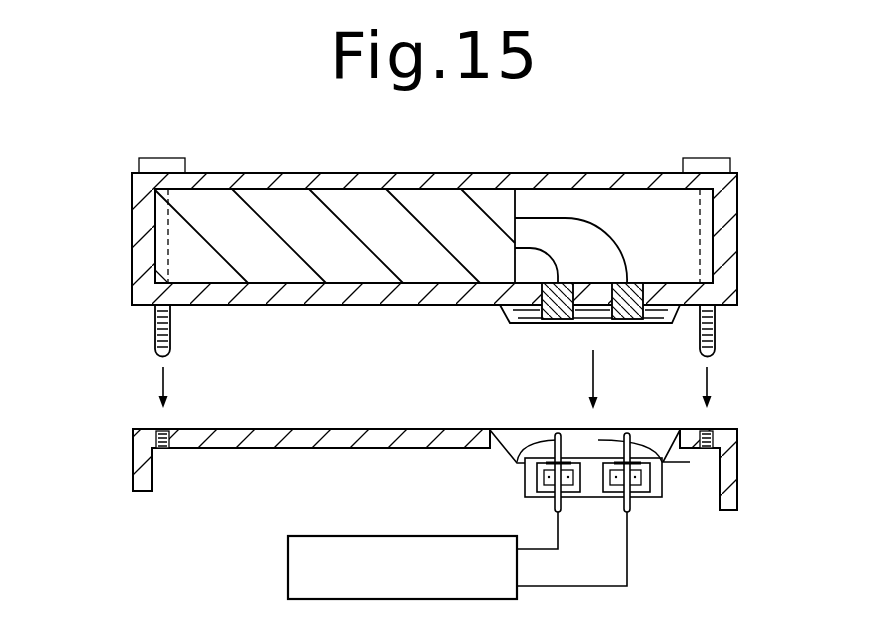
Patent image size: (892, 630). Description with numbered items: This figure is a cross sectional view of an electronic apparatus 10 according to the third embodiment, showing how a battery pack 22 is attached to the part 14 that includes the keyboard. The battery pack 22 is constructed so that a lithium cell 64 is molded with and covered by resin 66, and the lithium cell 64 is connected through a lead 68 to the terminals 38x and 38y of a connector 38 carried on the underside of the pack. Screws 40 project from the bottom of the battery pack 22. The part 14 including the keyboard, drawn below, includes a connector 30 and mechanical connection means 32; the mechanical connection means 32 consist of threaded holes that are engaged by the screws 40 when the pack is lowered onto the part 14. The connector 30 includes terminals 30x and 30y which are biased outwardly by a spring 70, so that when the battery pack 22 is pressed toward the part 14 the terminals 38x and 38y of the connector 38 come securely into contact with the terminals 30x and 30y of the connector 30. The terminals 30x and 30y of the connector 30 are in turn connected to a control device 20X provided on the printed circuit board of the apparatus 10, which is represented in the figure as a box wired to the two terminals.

The electronic apparatus 10 is at (668, 540).
The part including keyboard 14 is at (133, 461).
The control device 20X is at (288, 573).
The battery pack 22 is at (143, 236).
The connector 30 is at (642, 424).
The terminal 30x is at (525, 471).
The terminal 30y is at (656, 471).
The mechanical connection means (threaded hole) 32 is at (158, 432).
The connector 38 is at (518, 337).
The terminal 38x is at (560, 323).
The terminal 38y is at (627, 323).
The screw 40 is at (153, 324).
The lithium cell 64 is at (273, 205).
The resin 66 is at (462, 180).
The lead 68 is at (565, 216).
The spring 70 is at (590, 500).